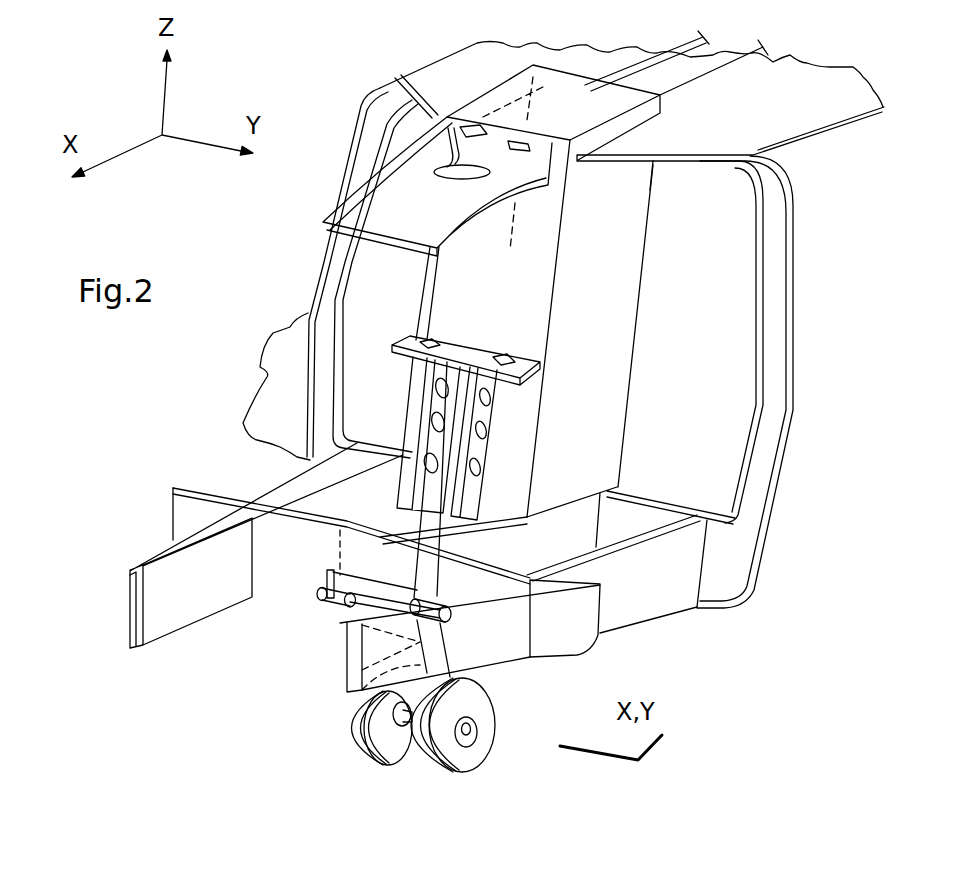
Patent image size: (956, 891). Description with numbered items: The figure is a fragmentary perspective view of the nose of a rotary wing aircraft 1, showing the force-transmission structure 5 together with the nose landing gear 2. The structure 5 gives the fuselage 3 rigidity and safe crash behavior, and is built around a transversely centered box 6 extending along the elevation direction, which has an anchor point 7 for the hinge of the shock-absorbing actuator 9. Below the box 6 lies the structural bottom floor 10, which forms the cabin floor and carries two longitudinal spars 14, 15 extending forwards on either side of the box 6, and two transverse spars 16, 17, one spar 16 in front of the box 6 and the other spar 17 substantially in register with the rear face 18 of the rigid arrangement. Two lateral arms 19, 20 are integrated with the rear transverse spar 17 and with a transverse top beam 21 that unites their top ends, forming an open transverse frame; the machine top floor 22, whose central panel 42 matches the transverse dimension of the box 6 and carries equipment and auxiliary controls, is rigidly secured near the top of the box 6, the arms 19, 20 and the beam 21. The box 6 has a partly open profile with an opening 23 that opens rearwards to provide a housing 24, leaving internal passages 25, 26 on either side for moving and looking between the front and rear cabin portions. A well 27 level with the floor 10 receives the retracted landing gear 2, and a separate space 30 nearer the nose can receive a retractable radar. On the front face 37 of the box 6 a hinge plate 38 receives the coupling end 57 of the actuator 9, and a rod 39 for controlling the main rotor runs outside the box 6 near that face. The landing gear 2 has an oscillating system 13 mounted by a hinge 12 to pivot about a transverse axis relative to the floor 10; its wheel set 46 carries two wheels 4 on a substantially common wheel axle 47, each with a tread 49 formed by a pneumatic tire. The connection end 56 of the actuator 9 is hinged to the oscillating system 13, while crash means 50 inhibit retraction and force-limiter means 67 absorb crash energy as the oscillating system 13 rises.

The rotary wing aircraft 1 is at (730, 433).
The landing gear 2 is at (400, 748).
The fuselage 3 is at (283, 354).
The wheel 4 is at (475, 749).
The force-transmission structure 5 is at (769, 406).
The box 6 is at (600, 345).
The anchor point 7 is at (409, 420).
The shock-absorbing actuator 9 is at (430, 530).
The structural bottom floor 10 is at (142, 526).
The hinge 12 is at (327, 592).
The oscillating system 13 is at (348, 607).
The longitudinal spar 14 is at (673, 606).
The longitudinal spar 15 is at (150, 628).
The transverse spar 16 is at (267, 542).
The transverse spar 17 is at (653, 512).
The rear face 18 is at (630, 393).
The lateral arm 19 is at (772, 255).
The lateral arm 20 is at (390, 98).
The transverse top beam 21 is at (727, 168).
The machine top floor 22 is at (433, 75).
The opening 23 is at (560, 97).
The housing 24 is at (562, 128).
The internal passage 25 is at (716, 325).
The internal passage 26 is at (396, 303).
The well 27 is at (354, 528).
The space 30 is at (172, 589).
The front face 37 is at (535, 242).
The hinge plate 38 is at (477, 445).
The rod 39 is at (437, 313).
The central panel 42 is at (737, 72).
The wheel set 46 is at (417, 777).
The wheel axle 47 is at (477, 728).
The tread 49 is at (417, 750).
The means operating in the event of a crash 50 is at (484, 492).
The connection end 56 is at (450, 603).
The coupling end 57 is at (439, 403).
The force-limiter means 67 is at (443, 573).